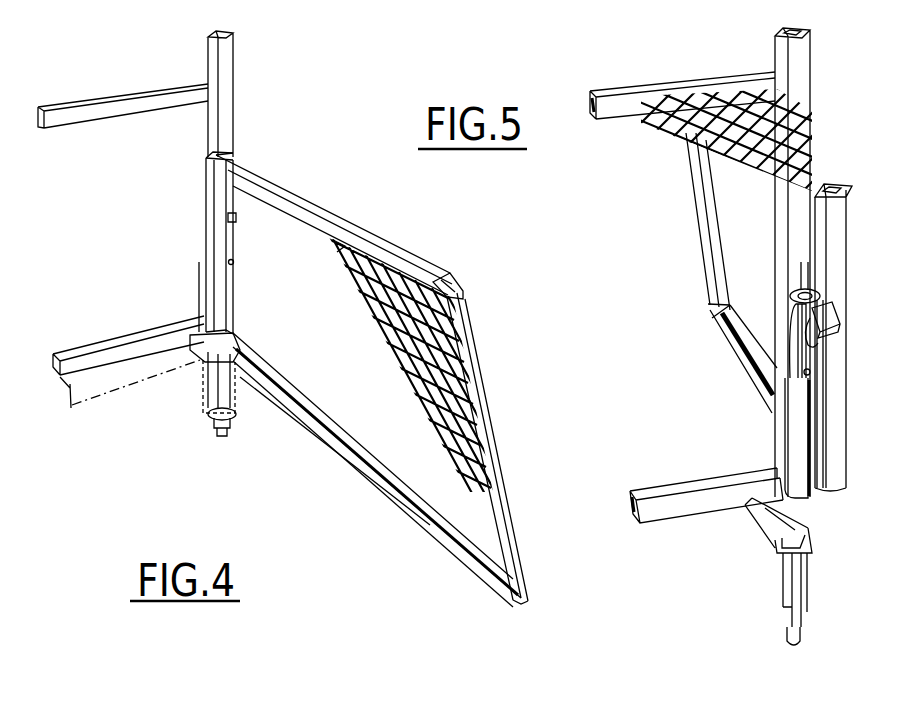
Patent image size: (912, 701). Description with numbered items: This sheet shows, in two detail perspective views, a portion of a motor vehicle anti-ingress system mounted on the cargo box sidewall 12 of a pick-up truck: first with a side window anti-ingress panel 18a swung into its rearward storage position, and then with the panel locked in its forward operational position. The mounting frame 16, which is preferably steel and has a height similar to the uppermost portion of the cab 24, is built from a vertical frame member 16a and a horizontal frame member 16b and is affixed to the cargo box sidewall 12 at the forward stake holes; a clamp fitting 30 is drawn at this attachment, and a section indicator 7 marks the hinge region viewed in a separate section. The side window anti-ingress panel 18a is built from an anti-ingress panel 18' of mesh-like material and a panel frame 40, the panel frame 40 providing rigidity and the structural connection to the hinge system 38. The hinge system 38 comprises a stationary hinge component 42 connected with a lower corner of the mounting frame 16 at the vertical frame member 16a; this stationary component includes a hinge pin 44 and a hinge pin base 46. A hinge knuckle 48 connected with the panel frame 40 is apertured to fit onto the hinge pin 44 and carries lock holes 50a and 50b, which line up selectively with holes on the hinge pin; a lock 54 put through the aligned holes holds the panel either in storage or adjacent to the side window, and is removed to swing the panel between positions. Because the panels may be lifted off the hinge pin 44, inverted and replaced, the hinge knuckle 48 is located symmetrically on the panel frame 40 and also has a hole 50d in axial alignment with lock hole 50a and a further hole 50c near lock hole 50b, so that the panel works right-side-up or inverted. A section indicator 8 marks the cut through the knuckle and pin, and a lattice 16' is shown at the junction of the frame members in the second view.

In FIG. 4, the cargo box sidewall 12 is at (292, 436).
In FIG. 5, the mounting frame 16 is at (682, 84).
In FIG. 4, the vertical frame member 16a is at (233, 95).
In FIG. 5, the vertical frame member 16a is at (813, 131).
In FIG. 4, the horizontal frame member 16b is at (118, 97).
In FIG. 5, the horizontal frame member 16b is at (617, 87).
In FIG. 5, the lattice panel 16' is at (739, 111).
In FIG. 4, the anti-ingress panel 18' is at (431, 386).
In FIG. 4, the side window anti-ingress panel 18a is at (404, 256).
In FIG. 4, the cab 24 is at (189, 269).
In FIG. 4, the clamp bolt assembly 30 is at (204, 350).
In FIG. 4, the hinge system 38 is at (256, 302).
In FIG. 4, the panel frame 40 is at (504, 502).
In FIG. 5, the panel frame 40 is at (852, 243).
In FIG. 5, the stationary hinge component 42 is at (752, 398).
In FIG. 5, the hinge pin 44 is at (800, 290).
In FIG. 5, the hinge pin base 46 is at (786, 437).
In FIG. 5, the hinge knuckle 48 is at (790, 323).
In FIG. 4, the lock hole 50a is at (234, 215).
In FIG. 5, the lock hole 50b is at (820, 347).
In FIG. 5, the fastener pin 50c is at (810, 375).
In FIG. 4, the hole 50d is at (240, 264).
In FIG. 5, the lock 54 is at (838, 320).
In FIG. 5, the section line 7 is at (805, 260).
In FIG. 4, the section line 8 is at (192, 232).